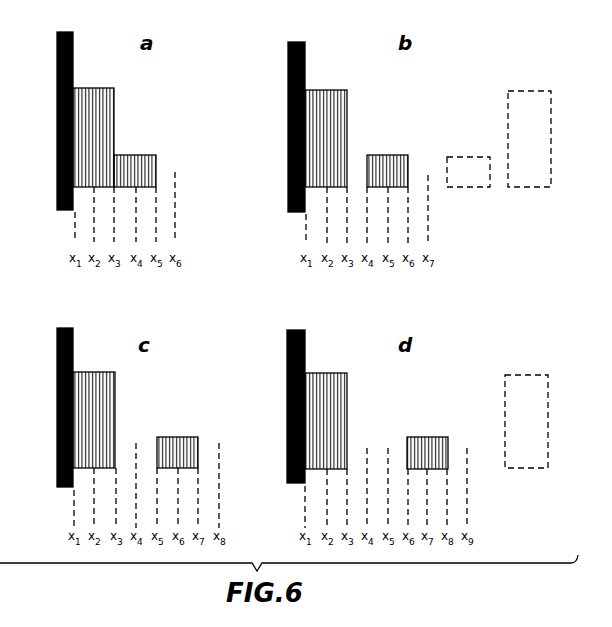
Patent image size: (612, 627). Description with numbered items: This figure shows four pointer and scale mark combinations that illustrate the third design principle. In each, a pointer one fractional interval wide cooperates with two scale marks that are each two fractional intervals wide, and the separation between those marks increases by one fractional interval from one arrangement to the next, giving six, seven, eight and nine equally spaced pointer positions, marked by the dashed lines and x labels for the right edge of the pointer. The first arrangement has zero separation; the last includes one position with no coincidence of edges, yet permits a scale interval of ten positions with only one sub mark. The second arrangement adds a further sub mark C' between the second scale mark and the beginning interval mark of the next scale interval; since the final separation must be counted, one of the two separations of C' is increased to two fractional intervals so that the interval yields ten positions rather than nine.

The additional scale mark (sub mark) C' is at (468, 159).